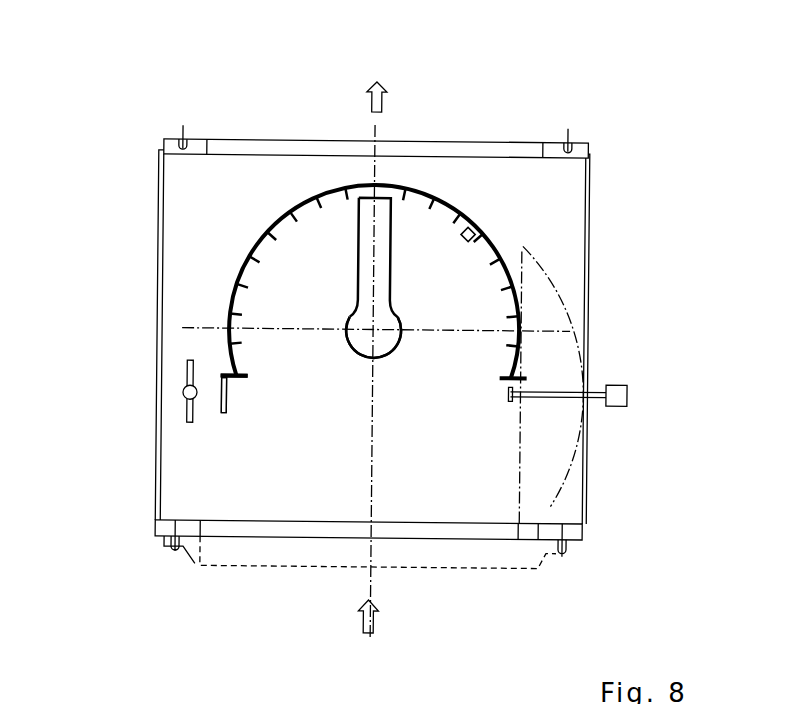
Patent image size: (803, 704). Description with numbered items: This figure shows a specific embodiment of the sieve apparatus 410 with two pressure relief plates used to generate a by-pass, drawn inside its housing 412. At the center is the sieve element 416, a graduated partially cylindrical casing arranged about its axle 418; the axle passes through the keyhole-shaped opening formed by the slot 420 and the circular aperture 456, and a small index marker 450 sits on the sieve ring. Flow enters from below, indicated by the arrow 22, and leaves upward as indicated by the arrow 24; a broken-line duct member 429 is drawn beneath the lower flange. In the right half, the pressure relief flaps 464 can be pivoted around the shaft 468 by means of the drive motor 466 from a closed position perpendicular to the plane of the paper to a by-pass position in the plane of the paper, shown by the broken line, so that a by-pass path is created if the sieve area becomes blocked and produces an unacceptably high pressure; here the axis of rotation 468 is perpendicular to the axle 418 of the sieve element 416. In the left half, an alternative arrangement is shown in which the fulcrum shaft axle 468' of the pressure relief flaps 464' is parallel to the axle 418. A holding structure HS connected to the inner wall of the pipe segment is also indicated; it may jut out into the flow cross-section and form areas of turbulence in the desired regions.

The sample handling apparatus 410 is at (681, 38).
The housing 412 is at (600, 158).
The sieve element 416 is at (450, 202).
The index marker 450 is at (472, 222).
The axle of sieve element 418 is at (373, 328).
The circular aperture of keyhole 456 is at (373, 337).
The slot 420 is at (358, 265).
The fluid inlet flow 22 is at (375, 625).
The fluid outlet flow 24 is at (372, 508).
The bottom duct member 429 is at (227, 565).
The pressure relief flaps 464 is at (615, 385).
The pressure relief flaps 464' is at (147, 437).
The drive motor 466 is at (620, 383).
The shaft 468 is at (609, 421).
The fulcrum shaft axle 468' is at (122, 408).
The holding structure HS is at (217, 413).